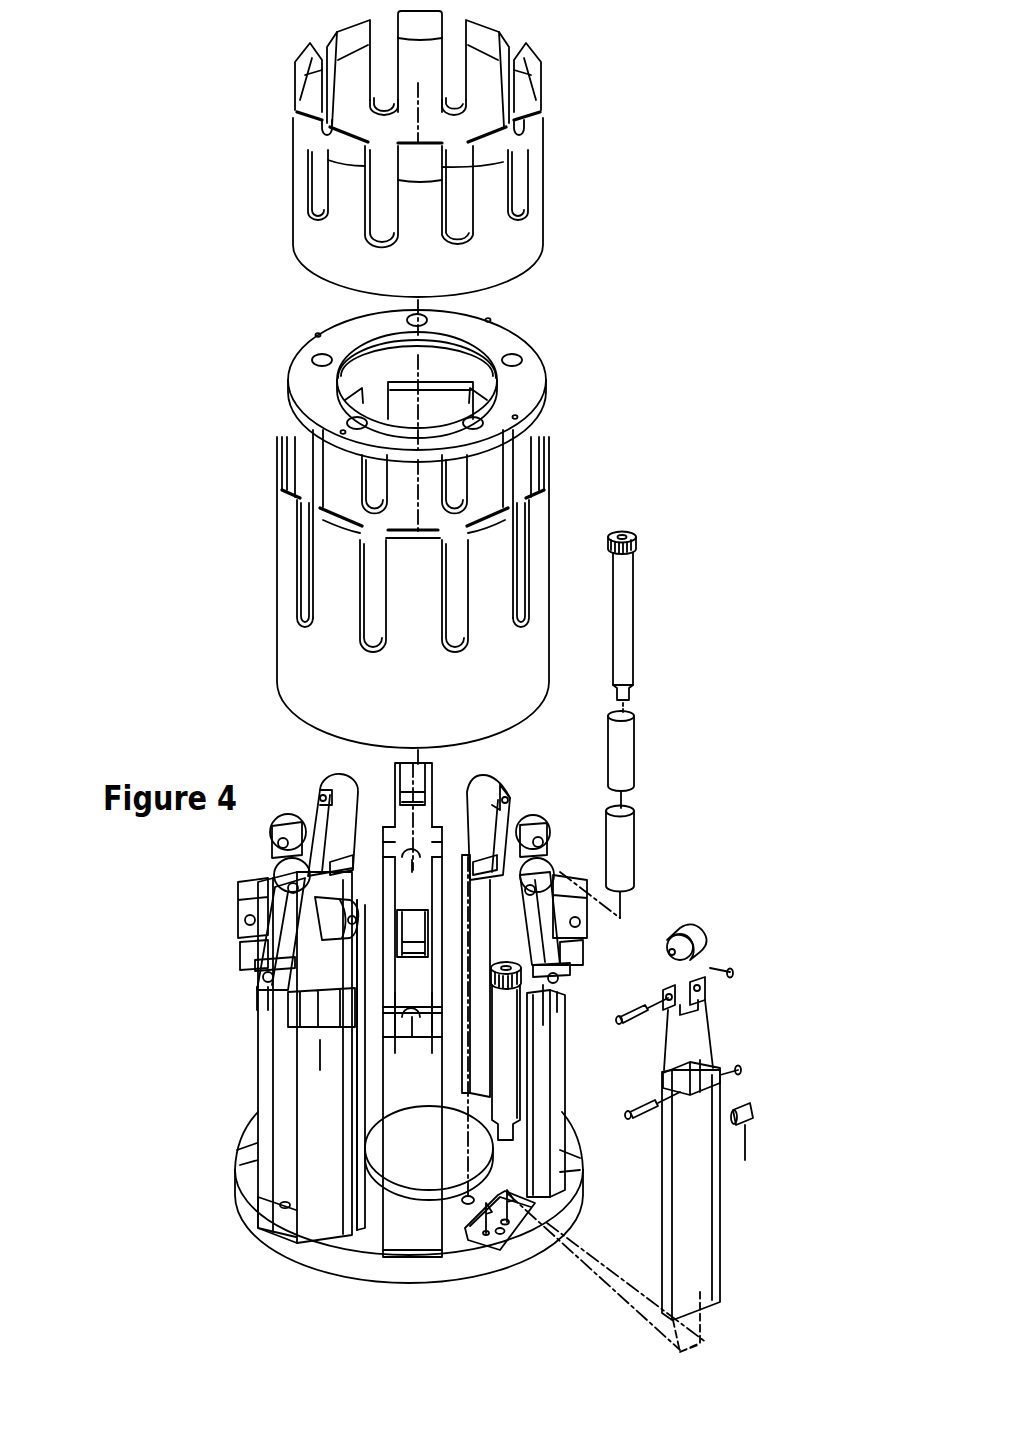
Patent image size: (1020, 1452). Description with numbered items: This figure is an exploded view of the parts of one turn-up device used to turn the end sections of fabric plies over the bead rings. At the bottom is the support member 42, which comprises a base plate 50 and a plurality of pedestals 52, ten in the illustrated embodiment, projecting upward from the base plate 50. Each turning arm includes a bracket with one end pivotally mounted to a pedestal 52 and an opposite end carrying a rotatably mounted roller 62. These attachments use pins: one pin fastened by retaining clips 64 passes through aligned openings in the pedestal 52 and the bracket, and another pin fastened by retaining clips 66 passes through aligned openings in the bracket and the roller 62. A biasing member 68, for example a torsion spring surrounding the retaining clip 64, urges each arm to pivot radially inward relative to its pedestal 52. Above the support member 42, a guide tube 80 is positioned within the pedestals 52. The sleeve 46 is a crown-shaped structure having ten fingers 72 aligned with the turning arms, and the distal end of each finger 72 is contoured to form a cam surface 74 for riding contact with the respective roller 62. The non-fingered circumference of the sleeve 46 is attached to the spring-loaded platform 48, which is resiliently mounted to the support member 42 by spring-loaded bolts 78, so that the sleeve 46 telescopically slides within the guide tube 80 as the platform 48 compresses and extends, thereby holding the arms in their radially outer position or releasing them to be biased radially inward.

The support member 42 is at (238, 1208).
The sleeve 46 is at (419, 154).
The spring-loaded platform 48 is at (518, 390).
The base plate 50 is at (466, 1268).
The pedestal 52 is at (334, 1105).
The roller 62 is at (685, 940).
The retaining clips 64 is at (635, 1102).
The retaining clips 66 is at (630, 1012).
The biasing member 68 is at (745, 1108).
The finger 72 is at (343, 183).
The cam surface 74 is at (345, 150).
The spring-loaded bolts 78 is at (626, 603).
The guide tube 80 is at (507, 660).